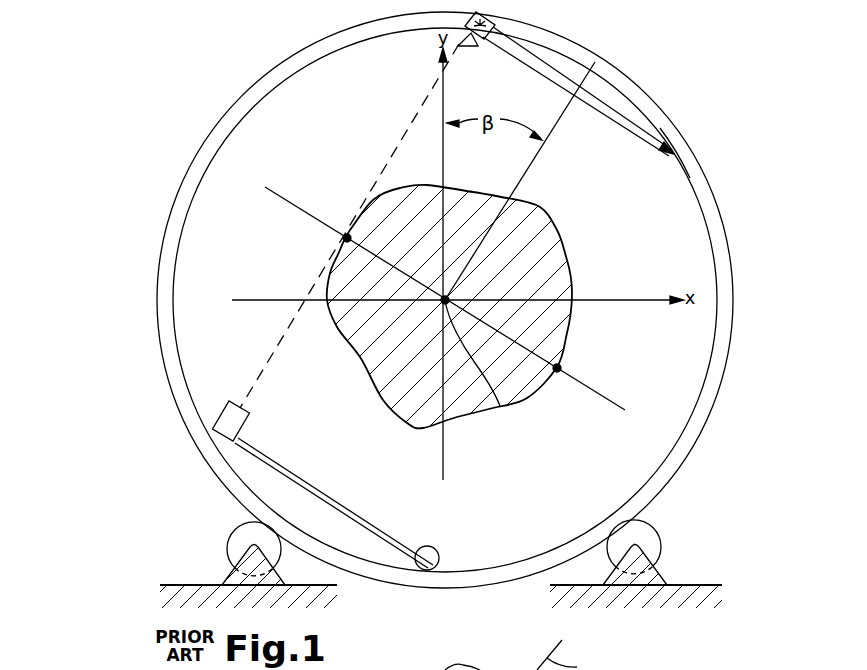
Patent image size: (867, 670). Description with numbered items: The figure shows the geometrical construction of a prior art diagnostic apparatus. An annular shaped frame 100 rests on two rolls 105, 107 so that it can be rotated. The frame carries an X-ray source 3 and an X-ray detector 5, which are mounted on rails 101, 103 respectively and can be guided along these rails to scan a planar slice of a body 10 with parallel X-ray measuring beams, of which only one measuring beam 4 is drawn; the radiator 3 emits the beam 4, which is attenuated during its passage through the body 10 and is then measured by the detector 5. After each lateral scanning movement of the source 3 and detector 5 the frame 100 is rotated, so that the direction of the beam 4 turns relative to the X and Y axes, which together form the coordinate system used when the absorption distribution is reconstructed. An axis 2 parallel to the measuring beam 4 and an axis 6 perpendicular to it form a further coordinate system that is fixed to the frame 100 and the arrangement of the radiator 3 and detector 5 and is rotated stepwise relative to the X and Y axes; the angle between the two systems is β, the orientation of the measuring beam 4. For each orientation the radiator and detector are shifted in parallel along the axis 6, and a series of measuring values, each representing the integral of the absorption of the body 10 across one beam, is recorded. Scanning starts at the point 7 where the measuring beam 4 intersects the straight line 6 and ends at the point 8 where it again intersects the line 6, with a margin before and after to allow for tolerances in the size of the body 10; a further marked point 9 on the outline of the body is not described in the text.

The axis 2 is at (565, 86).
The X-ray source 3 is at (484, 40).
The X-ray measuring beam 4 is at (408, 142).
The X-ray detector 5 is at (245, 428).
The axis 6 is at (453, 298).
The point 7 is at (347, 234).
The point 8 is at (501, 406).
The measuring point 9 is at (562, 367).
The body 10 is at (563, 242).
The annular shaped frame 100 is at (704, 198).
The rail 101 is at (646, 137).
The rail 103 is at (437, 572).
The roll 105 is at (650, 540).
The roll 107 is at (238, 533).